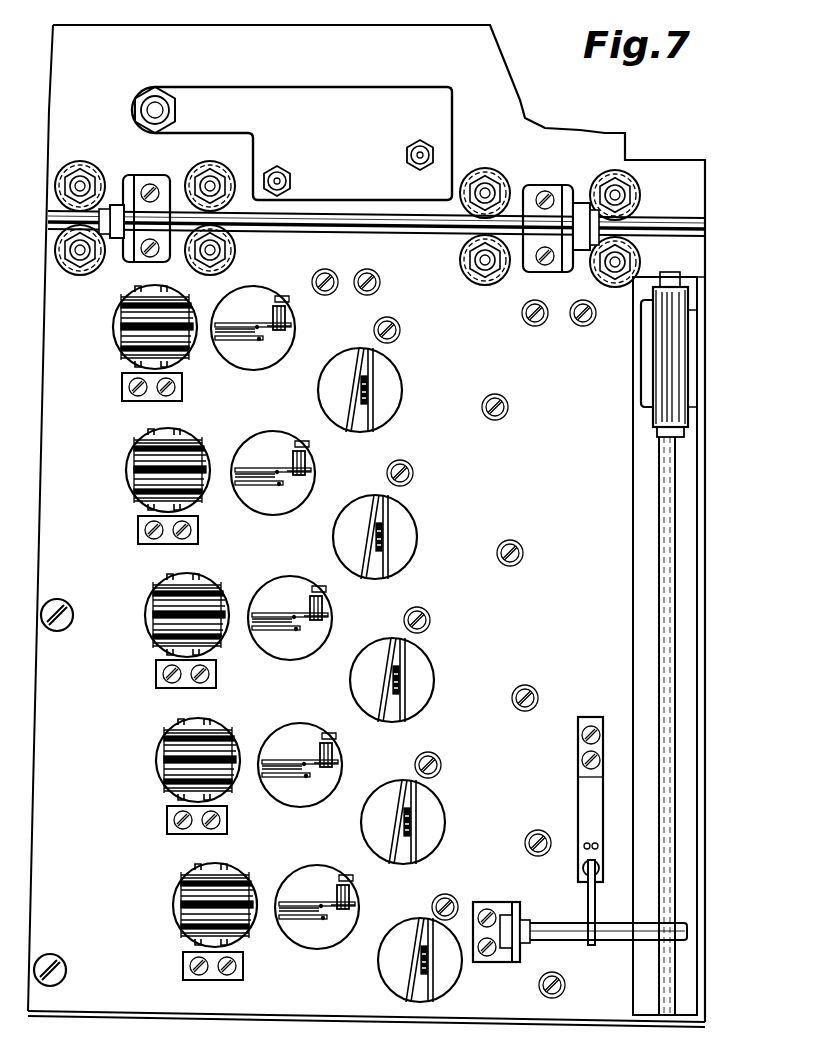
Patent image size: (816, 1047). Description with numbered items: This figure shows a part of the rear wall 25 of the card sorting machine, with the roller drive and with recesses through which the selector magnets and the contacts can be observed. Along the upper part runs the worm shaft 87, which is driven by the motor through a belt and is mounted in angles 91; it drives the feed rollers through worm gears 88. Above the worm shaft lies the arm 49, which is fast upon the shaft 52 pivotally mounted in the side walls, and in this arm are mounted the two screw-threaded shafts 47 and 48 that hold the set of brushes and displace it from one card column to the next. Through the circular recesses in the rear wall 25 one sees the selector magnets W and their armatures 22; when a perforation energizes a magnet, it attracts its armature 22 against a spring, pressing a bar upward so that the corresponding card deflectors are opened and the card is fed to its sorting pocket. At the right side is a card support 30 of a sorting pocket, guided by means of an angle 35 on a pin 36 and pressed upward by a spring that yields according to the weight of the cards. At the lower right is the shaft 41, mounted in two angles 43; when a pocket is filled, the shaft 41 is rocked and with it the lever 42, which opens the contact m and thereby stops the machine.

The rear wall 25 is at (95, 776).
The arm 49 is at (221, 110).
The shaft 52 is at (143, 102).
The screw-threaded shaft 47 is at (278, 166).
The screw-threaded shaft 48 is at (410, 145).
The worm shaft 87 is at (430, 224).
The worm gears 88 is at (634, 196).
The angles 91 is at (138, 188).
The armature 22 is at (369, 505).
The selector magnets W is at (290, 607).
The card support 30 is at (650, 349).
The angle 35 is at (658, 396).
The pin 36 is at (665, 465).
The contact m is at (586, 842).
The lever 42 is at (587, 895).
The shaft 41 is at (610, 940).
The angles 43 is at (490, 910).